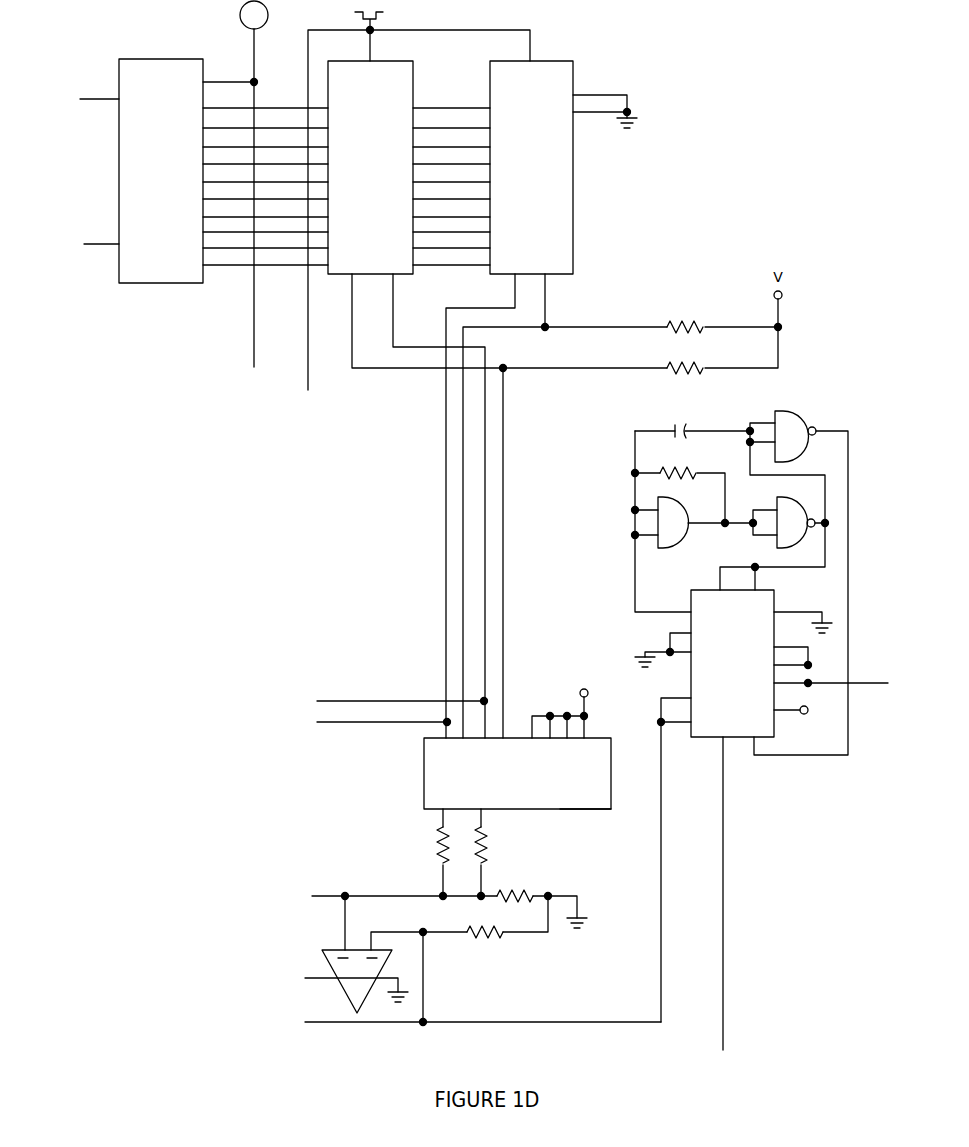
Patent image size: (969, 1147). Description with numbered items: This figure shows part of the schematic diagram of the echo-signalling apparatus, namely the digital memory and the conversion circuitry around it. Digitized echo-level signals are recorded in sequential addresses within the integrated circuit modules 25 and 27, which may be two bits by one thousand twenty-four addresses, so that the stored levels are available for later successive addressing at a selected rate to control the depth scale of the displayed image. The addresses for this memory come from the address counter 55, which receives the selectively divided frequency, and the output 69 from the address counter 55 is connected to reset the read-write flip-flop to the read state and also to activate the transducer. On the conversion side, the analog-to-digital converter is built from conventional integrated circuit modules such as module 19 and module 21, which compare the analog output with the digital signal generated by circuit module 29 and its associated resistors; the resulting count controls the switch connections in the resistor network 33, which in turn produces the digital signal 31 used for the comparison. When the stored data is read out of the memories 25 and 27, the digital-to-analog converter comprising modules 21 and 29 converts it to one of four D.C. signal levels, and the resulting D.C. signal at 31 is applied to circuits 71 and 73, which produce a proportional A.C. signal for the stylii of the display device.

The address counter 55 is at (150, 59).
The output from address counter 69 is at (256, 62).
The integrated circuit module 25 is at (414, 61).
The integrated circuit module 27 is at (573, 61).
The circuit 73 is at (860, 418).
The circuit module 29 is at (424, 770).
The integrated circuit module 19 is at (605, 809).
The circuit 71 is at (703, 742).
The resistor network 33 is at (543, 880).
The integrated circuit module 21 is at (330, 950).
The digital signal 31 is at (430, 1018).